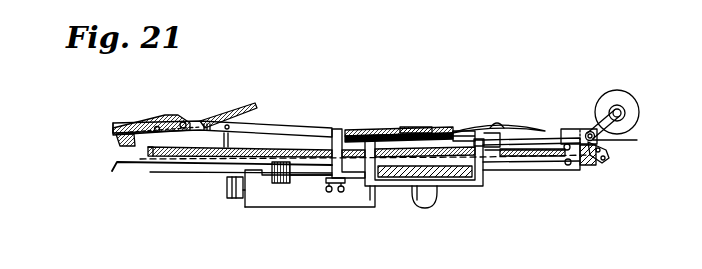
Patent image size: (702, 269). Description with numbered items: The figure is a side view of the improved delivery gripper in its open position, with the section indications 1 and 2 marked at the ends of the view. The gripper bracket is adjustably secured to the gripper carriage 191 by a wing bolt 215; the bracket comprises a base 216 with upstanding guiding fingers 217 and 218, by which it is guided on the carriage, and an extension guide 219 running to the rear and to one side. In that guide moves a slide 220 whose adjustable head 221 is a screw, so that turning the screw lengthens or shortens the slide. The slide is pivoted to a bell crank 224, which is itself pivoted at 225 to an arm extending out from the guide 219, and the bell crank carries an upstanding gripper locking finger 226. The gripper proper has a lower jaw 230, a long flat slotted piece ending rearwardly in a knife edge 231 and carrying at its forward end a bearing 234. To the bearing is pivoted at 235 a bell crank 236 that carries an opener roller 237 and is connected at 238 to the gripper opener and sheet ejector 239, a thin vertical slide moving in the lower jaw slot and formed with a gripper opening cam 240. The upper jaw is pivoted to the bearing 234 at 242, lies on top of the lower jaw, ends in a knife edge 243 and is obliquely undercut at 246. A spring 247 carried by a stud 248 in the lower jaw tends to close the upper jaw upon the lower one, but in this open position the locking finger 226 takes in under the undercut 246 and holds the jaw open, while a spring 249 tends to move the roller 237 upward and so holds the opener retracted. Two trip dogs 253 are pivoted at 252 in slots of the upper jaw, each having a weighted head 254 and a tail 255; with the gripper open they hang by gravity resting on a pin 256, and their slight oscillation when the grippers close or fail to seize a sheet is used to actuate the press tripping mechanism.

The section reference 1 is at (677, 182).
The section reference 2 is at (22, 182).
The gripper carriage 191 is at (458, 168).
The wing bolt 215 is at (428, 207).
The base 216 is at (400, 182).
The guiding finger 217 is at (370, 200).
The guiding finger 218 is at (479, 139).
The extension guide 219 is at (304, 208).
The slide 220 is at (244, 199).
The adjustable head 221 is at (226, 187).
The bell crank 224 is at (308, 176).
The pivot 225 is at (278, 184).
The gripper locking finger 226 is at (336, 129).
The lower jaw 230 is at (525, 167).
The knife edge 231 is at (216, 178).
The bearing 234 is at (571, 129).
The pivot 235 is at (625, 140).
The bell crank 236 is at (640, 79).
The opener roller 237 is at (636, 104).
The connection 238 is at (604, 162).
The gripper opener and sheet ejector 239 is at (268, 148).
The gripper opening cam 240 is at (418, 127).
The pivot 242 is at (584, 168).
The knife edge 243 is at (122, 135).
The undercut 246 is at (363, 134).
The spring 247 is at (509, 162).
The stud 248 is at (525, 172).
The spring 249 is at (612, 125).
The pivot 252 is at (184, 121).
The trip dog 253 is at (147, 116).
The weighted head 254 is at (110, 126).
The tail 255 is at (246, 103).
The pin 256 is at (157, 132).